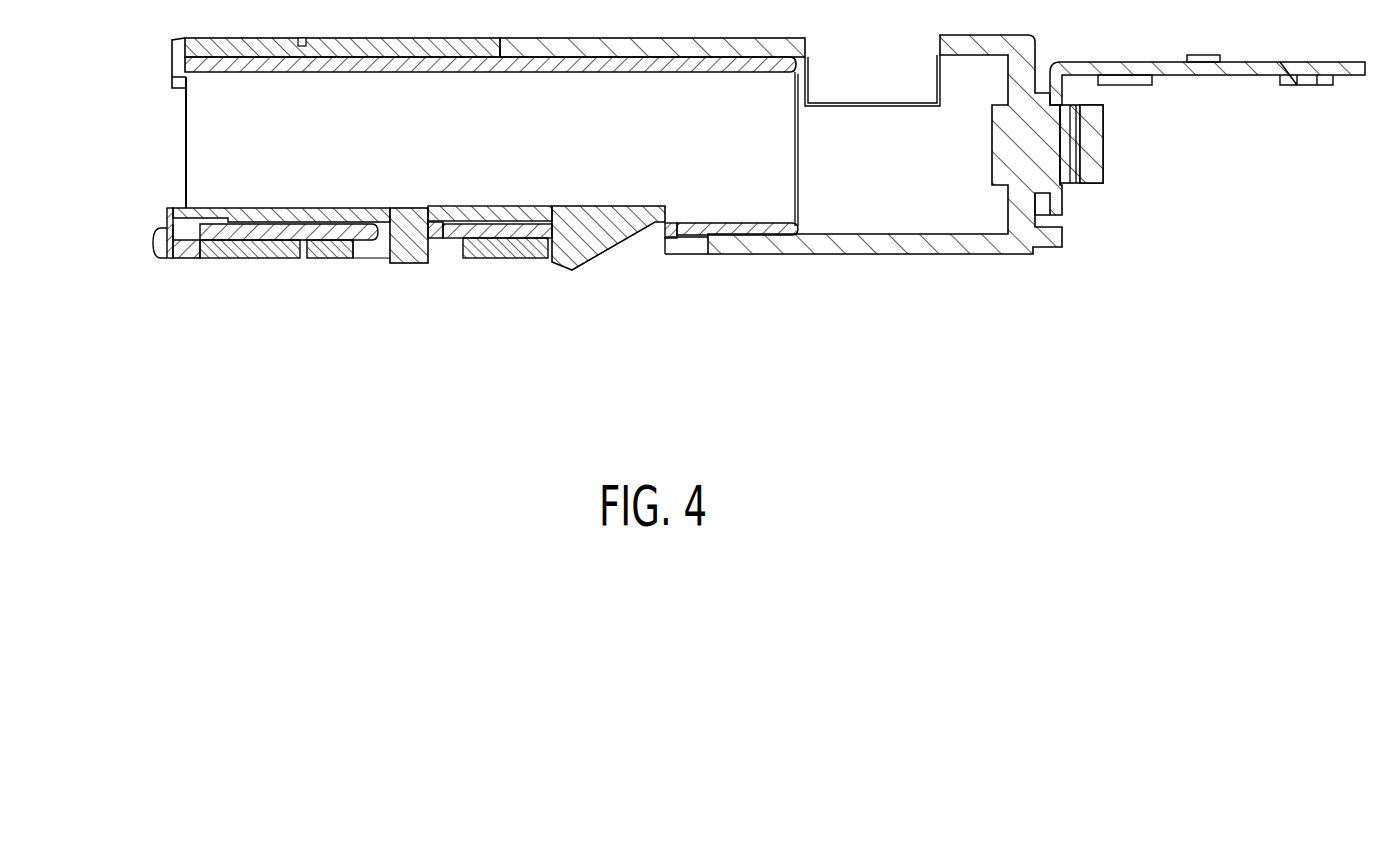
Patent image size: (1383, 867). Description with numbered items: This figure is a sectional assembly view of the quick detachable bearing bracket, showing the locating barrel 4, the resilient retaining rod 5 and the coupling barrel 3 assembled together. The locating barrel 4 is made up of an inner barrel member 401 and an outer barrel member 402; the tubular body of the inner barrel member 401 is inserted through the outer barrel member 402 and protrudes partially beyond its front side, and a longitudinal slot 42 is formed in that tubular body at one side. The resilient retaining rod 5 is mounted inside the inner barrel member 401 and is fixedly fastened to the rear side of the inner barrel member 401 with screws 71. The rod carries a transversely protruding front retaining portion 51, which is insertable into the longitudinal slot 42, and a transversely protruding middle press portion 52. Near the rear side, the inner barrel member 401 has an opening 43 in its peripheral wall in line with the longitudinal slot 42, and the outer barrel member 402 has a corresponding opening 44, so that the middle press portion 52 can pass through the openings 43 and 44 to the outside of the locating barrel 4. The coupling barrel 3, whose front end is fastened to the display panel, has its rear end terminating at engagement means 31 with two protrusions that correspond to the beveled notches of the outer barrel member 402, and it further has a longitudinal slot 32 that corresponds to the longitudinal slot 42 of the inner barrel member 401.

The coupling barrel 3 is at (928, 255).
The engagement means 31 is at (512, 236).
The longitudinal slot 32 is at (678, 248).
The locating barrel 4 is at (193, 340).
The inner barrel member 401 is at (285, 263).
The outer barrel member 402 is at (213, 260).
The longitudinal slot 42 is at (660, 233).
The opening 43 is at (440, 236).
The opening 44 is at (373, 250).
The resilient retaining rod 5 is at (263, 210).
The front retaining portion 51 is at (560, 258).
The middle press portion 52 is at (410, 263).
The screws 71 is at (153, 243).